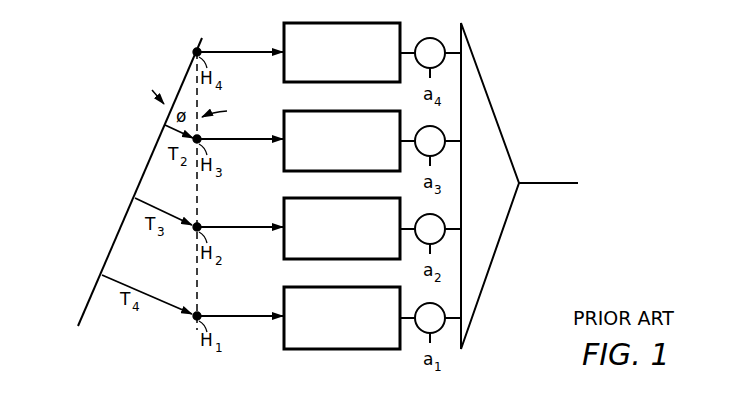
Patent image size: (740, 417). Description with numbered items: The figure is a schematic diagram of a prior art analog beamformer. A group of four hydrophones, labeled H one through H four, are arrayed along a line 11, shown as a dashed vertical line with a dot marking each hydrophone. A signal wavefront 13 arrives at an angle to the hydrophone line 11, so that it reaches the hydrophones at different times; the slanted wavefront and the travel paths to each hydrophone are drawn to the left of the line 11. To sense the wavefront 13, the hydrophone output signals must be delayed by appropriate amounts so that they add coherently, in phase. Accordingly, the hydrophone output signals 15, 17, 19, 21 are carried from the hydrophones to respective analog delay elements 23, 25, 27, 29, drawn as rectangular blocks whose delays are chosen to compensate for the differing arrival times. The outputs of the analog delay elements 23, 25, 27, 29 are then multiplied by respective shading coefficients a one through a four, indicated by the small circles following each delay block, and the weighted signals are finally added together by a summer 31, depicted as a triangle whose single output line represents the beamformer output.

The line 11 is at (195, 290).
The signal wavefront 13 is at (85, 310).
The hydrophone output signal 15 is at (250, 318).
The hydrophone output signal 17 is at (250, 229).
The hydrophone output signal 19 is at (250, 141).
The hydrophone output signal 21 is at (250, 54).
The analog delay element 23 is at (386, 272).
The analog delay element 25 is at (386, 183).
The analog delay element 27 is at (386, 96).
The analog delay element 29 is at (386, 8).
The summer 31 is at (497, 125).